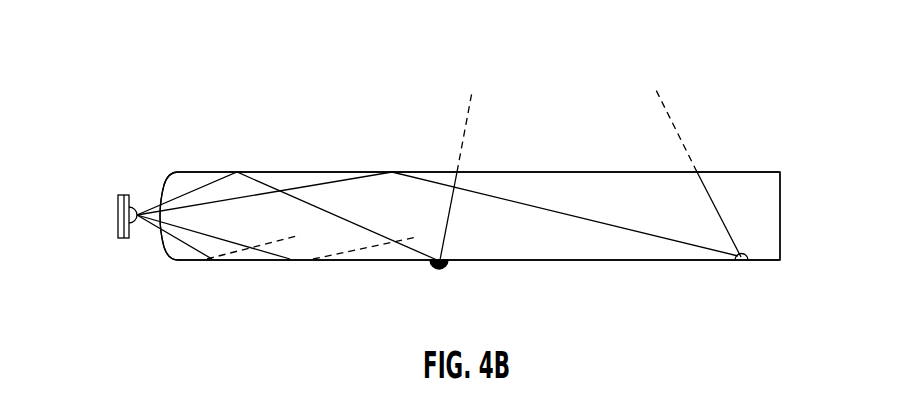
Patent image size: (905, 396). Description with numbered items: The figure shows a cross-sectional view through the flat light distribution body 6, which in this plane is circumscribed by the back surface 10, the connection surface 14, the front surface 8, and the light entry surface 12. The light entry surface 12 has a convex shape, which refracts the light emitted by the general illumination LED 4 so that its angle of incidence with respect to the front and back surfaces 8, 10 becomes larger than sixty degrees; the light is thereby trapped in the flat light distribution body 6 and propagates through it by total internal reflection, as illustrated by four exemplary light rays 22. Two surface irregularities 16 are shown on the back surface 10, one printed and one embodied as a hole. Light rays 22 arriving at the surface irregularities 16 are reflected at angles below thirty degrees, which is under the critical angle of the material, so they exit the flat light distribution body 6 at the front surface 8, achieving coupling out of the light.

The general illumination LED 4 is at (118, 215).
The flat light distribution body 6 is at (748, 131).
The front surface 8 is at (548, 172).
The back surface 10 is at (600, 261).
The light entry surface 12 is at (167, 252).
The connection surface 14 is at (780, 227).
The surface irregularities 16 is at (429, 270).
The light rays 22 is at (255, 249).